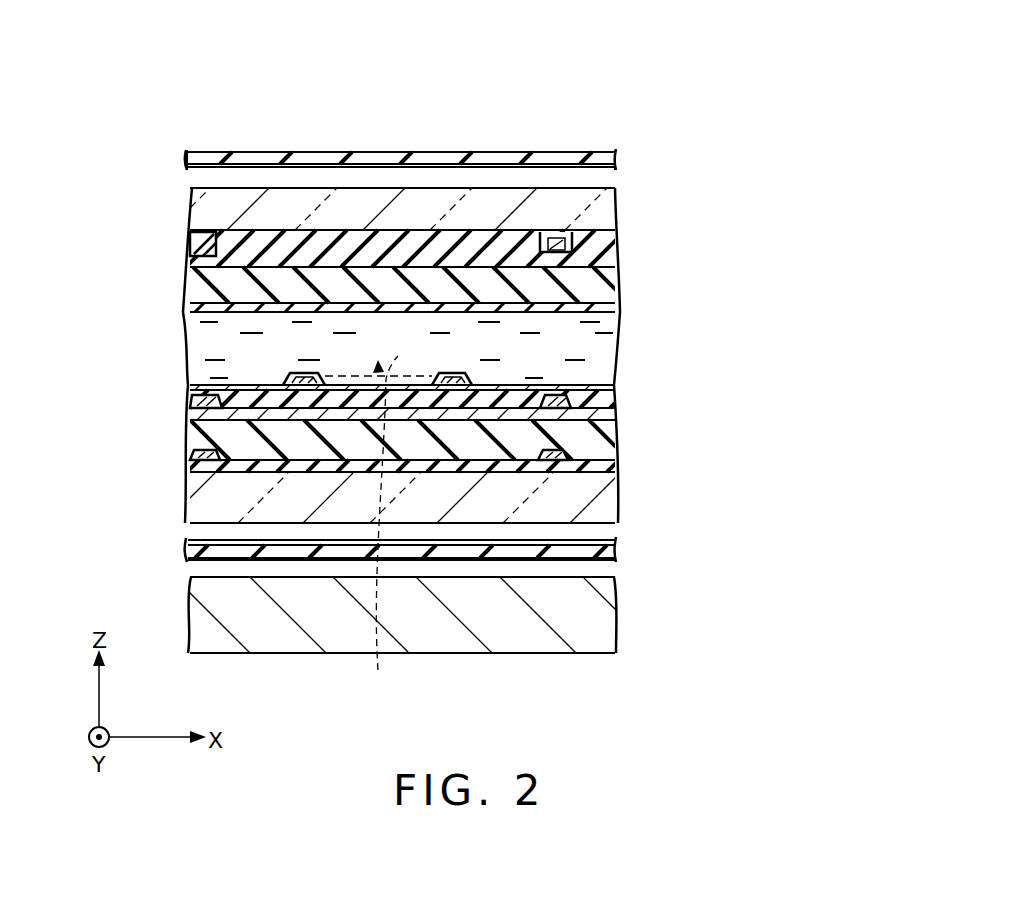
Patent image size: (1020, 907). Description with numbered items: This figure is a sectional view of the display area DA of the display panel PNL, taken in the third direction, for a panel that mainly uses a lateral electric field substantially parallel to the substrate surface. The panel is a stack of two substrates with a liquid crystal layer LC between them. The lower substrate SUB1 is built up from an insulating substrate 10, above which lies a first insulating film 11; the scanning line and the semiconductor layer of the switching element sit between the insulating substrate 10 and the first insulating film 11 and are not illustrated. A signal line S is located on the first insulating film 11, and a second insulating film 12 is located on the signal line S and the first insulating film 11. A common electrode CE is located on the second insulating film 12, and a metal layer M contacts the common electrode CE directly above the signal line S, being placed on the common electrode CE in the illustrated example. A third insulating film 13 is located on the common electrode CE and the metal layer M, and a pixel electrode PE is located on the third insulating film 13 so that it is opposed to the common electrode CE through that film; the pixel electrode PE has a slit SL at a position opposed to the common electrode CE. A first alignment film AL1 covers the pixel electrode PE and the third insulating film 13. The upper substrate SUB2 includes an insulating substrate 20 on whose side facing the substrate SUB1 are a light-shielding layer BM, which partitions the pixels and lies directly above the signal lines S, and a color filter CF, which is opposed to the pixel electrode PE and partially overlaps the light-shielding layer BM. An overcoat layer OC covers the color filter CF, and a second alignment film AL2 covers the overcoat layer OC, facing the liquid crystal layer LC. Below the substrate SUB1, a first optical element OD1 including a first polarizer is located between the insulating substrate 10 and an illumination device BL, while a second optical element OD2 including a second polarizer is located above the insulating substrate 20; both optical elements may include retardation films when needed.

The display area DA is at (216, 88).
The display panel PNL is at (611, 144).
The second optical element OD2 is at (617, 158).
The substrate SUB2 is at (712, 198).
The insulating substrate 20 is at (605, 215).
The color filter CF is at (383, 234).
The light-shielding layer BM is at (212, 238).
The overcoat layer OC is at (607, 290).
The second alignment film AL2 is at (600, 310).
The liquid crystal layer LC is at (595, 338).
The pixel electrode PE is at (470, 376).
The common electrode CE is at (530, 410).
The slit SL is at (384, 526).
The substrate SUB1 is at (712, 348).
The first alignment film AL1 is at (578, 385).
The metal layer M is at (200, 394).
The third insulating film 13 is at (600, 406).
The second insulating film 12 is at (605, 440).
The signal line S is at (205, 462).
The first insulating film 11 is at (605, 466).
The insulating substrate 10 is at (605, 505).
The first optical element OD1 is at (617, 552).
The illumination device BL is at (605, 630).